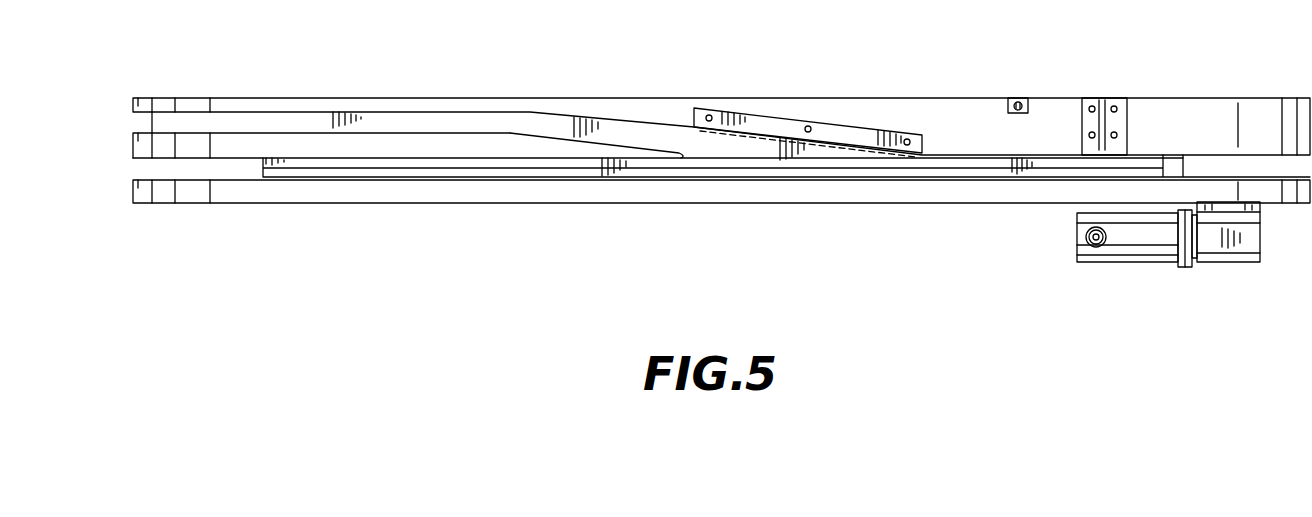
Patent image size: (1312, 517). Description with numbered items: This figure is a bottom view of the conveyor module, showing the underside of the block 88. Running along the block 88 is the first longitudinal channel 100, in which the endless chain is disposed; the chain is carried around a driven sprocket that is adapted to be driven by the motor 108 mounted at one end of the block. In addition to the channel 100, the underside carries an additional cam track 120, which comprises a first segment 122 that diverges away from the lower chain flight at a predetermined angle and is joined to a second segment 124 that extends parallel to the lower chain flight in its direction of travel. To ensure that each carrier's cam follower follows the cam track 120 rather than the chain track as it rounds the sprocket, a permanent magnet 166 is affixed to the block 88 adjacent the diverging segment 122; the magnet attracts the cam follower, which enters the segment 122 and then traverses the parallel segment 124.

The cam track 120 is at (375, 110).
The second segment 124 is at (222, 120).
The first segment 122 is at (622, 130).
The permanent magnet 166 is at (757, 117).
The block 88 is at (1146, 110).
The first longitudinal channel 100 is at (1267, 197).
The motor 108 is at (1097, 263).